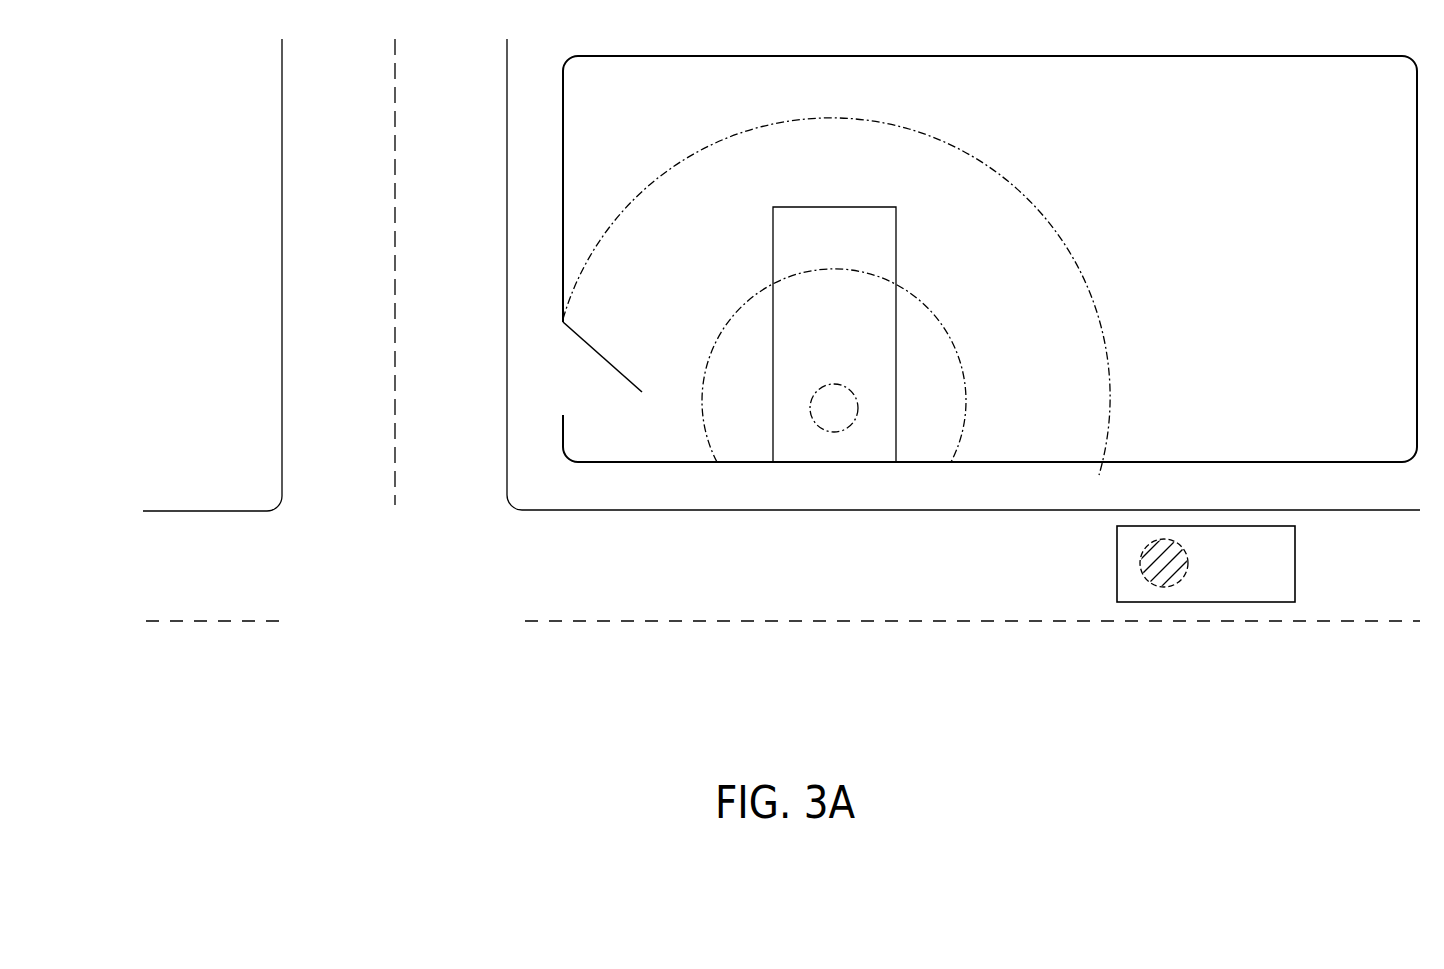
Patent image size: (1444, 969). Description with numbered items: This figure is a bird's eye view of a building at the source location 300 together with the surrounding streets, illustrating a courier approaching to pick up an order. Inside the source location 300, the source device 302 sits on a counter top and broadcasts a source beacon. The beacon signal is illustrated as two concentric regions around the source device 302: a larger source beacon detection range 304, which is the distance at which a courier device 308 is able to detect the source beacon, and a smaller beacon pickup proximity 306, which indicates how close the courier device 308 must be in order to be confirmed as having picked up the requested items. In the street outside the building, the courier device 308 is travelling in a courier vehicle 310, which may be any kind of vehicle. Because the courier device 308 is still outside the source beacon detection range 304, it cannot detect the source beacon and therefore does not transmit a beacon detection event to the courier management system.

The source location 300 is at (990, 242).
The source device 302 is at (834, 384).
The source beacon detection range 304 is at (1041, 216).
The beacon pickup proximity 306 is at (966, 400).
The courier device 308 is at (1157, 586).
The courier vehicle 310 is at (1257, 603).